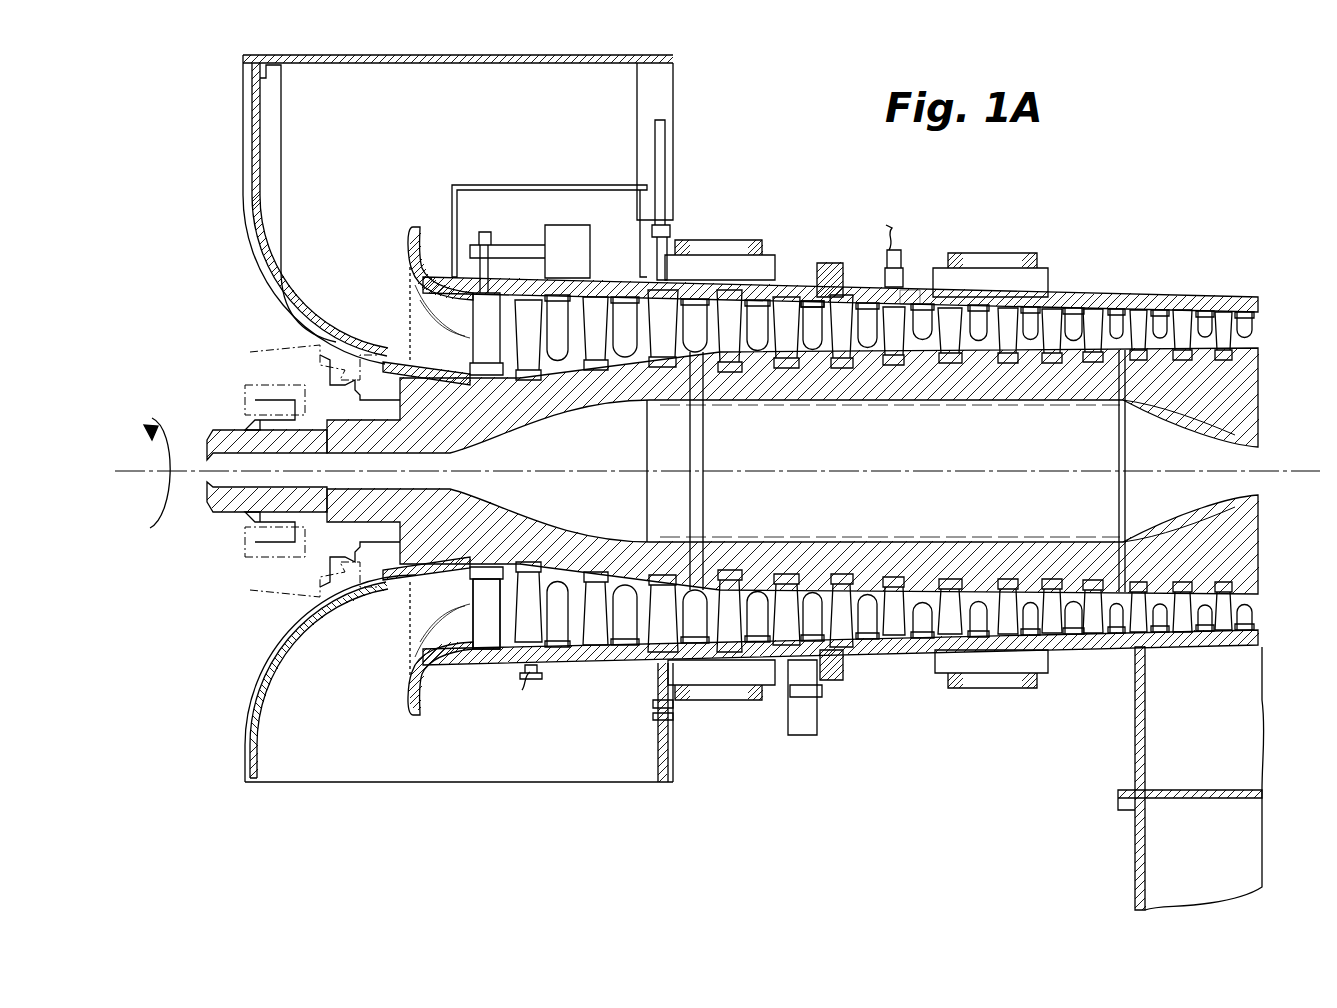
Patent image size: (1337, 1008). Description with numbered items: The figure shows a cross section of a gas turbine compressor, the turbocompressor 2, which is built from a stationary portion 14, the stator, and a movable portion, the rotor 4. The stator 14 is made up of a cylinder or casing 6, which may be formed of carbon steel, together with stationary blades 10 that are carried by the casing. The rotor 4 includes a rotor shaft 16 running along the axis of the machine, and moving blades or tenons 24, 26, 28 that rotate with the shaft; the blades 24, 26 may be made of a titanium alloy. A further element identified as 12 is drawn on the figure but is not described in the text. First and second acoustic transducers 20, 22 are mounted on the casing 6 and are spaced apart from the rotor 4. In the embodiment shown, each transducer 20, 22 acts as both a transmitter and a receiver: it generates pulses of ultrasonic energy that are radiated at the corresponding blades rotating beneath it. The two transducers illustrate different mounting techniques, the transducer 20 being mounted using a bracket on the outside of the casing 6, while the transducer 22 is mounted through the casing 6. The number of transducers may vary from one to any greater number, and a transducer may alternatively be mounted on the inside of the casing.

The turbocompressor 2 is at (1133, 232).
The rotor 4 is at (1237, 387).
The casing 6 is at (792, 307).
The stationary blades 10 is at (1242, 297).
The stator vane 12 is at (792, 287).
The stationary portion 14 is at (870, 655).
The rotor shaft 16 is at (262, 446).
The first acoustic transducer 20 is at (903, 283).
The second acoustic transducer 22 is at (535, 665).
The moving blade 24 is at (910, 283).
The moving blade 26 is at (847, 268).
The moving blade 28 is at (527, 630).